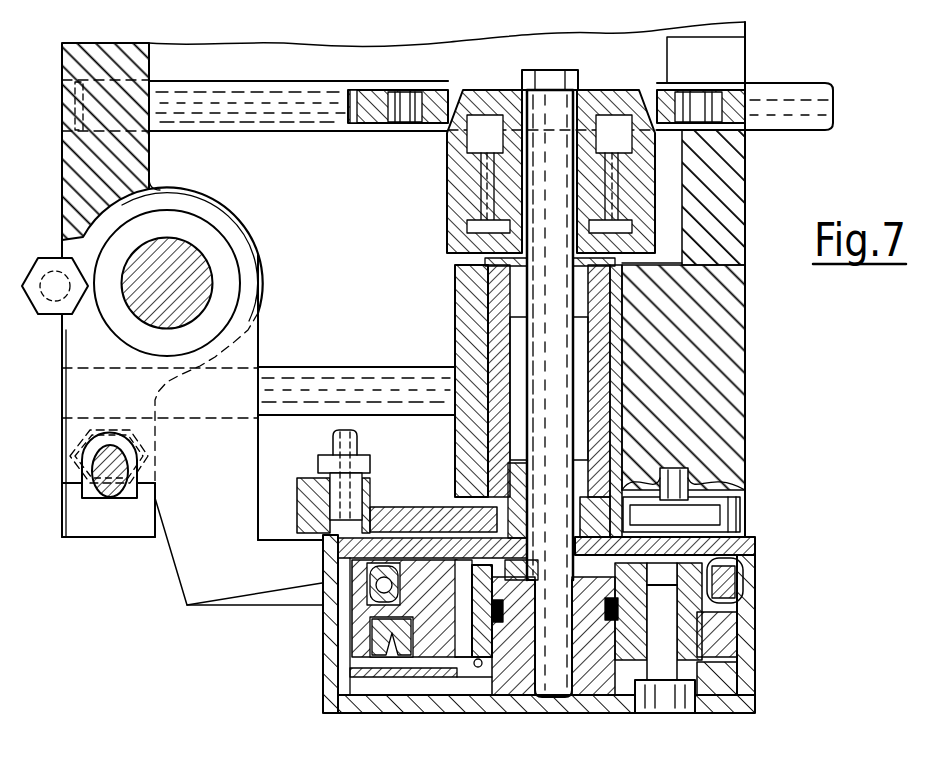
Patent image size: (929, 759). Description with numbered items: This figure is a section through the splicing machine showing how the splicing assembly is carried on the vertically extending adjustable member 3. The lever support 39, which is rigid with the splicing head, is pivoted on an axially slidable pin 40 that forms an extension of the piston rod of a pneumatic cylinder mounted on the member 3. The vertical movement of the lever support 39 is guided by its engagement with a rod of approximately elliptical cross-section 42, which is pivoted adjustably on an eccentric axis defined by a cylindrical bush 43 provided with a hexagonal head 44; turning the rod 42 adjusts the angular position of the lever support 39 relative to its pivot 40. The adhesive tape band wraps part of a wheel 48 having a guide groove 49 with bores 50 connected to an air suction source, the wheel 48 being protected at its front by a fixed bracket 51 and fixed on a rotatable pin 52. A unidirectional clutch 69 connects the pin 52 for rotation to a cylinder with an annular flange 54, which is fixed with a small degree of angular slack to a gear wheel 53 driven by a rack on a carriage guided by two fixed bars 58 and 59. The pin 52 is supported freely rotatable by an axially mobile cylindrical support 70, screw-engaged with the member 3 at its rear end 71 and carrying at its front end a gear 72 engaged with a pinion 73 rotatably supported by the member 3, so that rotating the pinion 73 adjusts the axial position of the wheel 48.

The adjustable member 3 is at (78, 183).
The lever support 39 is at (248, 583).
The axially slidable pin 40 is at (197, 278).
The rod of approximately elliptical cross-section 42 is at (113, 495).
The cylindrical bush 43 is at (140, 455).
The hexagonal head 44 is at (75, 452).
The wheel 48 is at (757, 548).
The guide groove 49 is at (757, 587).
The bores 50 is at (768, 578).
The fixed bracket 51 is at (740, 685).
The rotatable pin 52 is at (551, 108).
The gear wheel 53 is at (351, 80).
The cylinder with an annular flange 54 is at (457, 92).
The fixed bar 58 is at (230, 120).
The fixed bar 59 is at (315, 385).
The unidirectional clutch 69 is at (487, 186).
The axially mobile cylindrical support 70 is at (485, 336).
The rear end 71 is at (487, 274).
The gear 72 is at (380, 538).
The pinion 73 is at (733, 512).